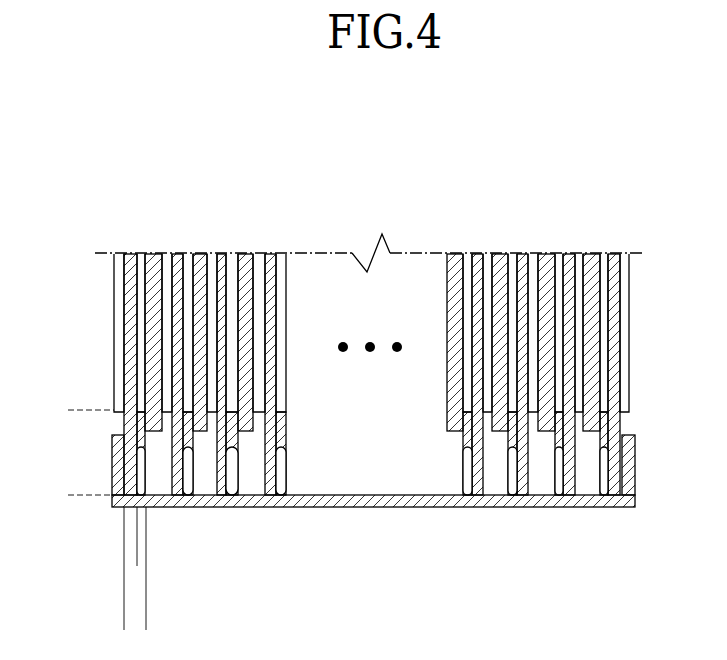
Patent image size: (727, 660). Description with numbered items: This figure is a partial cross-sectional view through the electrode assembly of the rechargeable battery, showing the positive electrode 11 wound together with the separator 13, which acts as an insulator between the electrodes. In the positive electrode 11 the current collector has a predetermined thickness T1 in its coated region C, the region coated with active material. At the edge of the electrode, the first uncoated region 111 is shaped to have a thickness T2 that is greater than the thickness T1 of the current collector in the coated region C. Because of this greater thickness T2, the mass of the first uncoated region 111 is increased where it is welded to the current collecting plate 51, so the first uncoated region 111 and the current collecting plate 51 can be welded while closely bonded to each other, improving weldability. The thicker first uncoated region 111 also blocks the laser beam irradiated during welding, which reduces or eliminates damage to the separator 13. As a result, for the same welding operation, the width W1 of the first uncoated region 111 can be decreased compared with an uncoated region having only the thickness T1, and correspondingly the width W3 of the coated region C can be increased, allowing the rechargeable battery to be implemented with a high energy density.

The first electrode 11 is at (363, 301).
The separator 13 is at (152, 265).
The coated region C is at (120, 275).
The current collecting plate 51 is at (389, 509).
The first uncoated region 111 is at (605, 509).
The width of the first uncoated region W1 is at (75, 411).
The width of the coated region W3 is at (75, 255).
The thickness of the current collector in the coated region T1 is at (112, 561).
The thickness of the uncoated region T2 is at (170, 619).